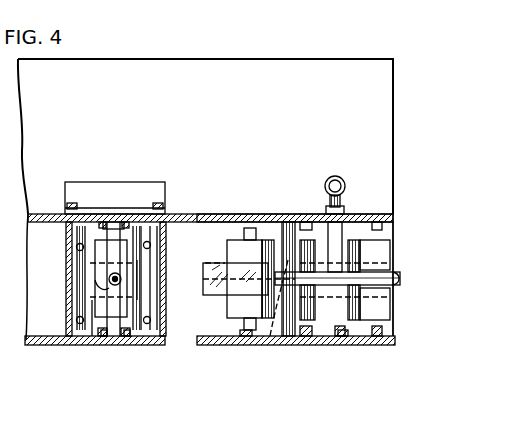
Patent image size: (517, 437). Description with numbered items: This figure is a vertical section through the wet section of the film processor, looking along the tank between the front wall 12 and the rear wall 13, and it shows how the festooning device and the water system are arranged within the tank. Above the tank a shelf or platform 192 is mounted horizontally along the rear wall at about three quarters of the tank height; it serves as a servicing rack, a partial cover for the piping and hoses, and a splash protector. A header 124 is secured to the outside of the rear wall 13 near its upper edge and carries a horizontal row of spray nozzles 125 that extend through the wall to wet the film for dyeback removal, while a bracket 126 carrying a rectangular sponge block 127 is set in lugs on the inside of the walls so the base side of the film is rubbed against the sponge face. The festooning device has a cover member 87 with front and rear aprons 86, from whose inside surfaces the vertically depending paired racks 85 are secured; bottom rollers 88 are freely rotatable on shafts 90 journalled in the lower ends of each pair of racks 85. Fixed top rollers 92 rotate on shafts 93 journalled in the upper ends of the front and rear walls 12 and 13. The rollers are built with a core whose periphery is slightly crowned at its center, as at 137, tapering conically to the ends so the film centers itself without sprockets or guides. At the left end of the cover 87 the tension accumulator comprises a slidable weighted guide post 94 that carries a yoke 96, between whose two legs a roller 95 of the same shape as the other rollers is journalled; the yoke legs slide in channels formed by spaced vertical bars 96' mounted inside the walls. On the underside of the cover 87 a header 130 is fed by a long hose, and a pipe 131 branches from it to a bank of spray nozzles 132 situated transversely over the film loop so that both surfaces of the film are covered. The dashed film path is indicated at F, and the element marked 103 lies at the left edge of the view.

The shelf or platform 192 is at (340, 66).
The rear wall 13 is at (179, 216).
The front wall 12 is at (177, 344).
The header 124 is at (151, 190).
The slidable weighted guide post 94 is at (108, 277).
The yoke 96 is at (112, 303).
The spaced vertical bars 96' is at (107, 281).
The roller 95 is at (100, 334).
The crowned core periphery 137 is at (100, 289).
The film plane F is at (92, 263).
The spray nozzles 125 is at (77, 247).
The rectangular sponge block 127 is at (140, 302).
The bracket 126 is at (206, 278).
The top rollers 92 is at (230, 314).
The pipe 131 is at (313, 218).
The bottom rollers 88 is at (268, 217).
The front and rear aprons 86 is at (240, 217).
The header 130 is at (323, 217).
The paired racks 85 is at (279, 216).
The cover member 87 is at (228, 202).
The shafts 93 is at (246, 345).
The spray nozzles 132 is at (272, 346).
The shafts 90 is at (380, 348).
The wall 103 is at (9, 303).